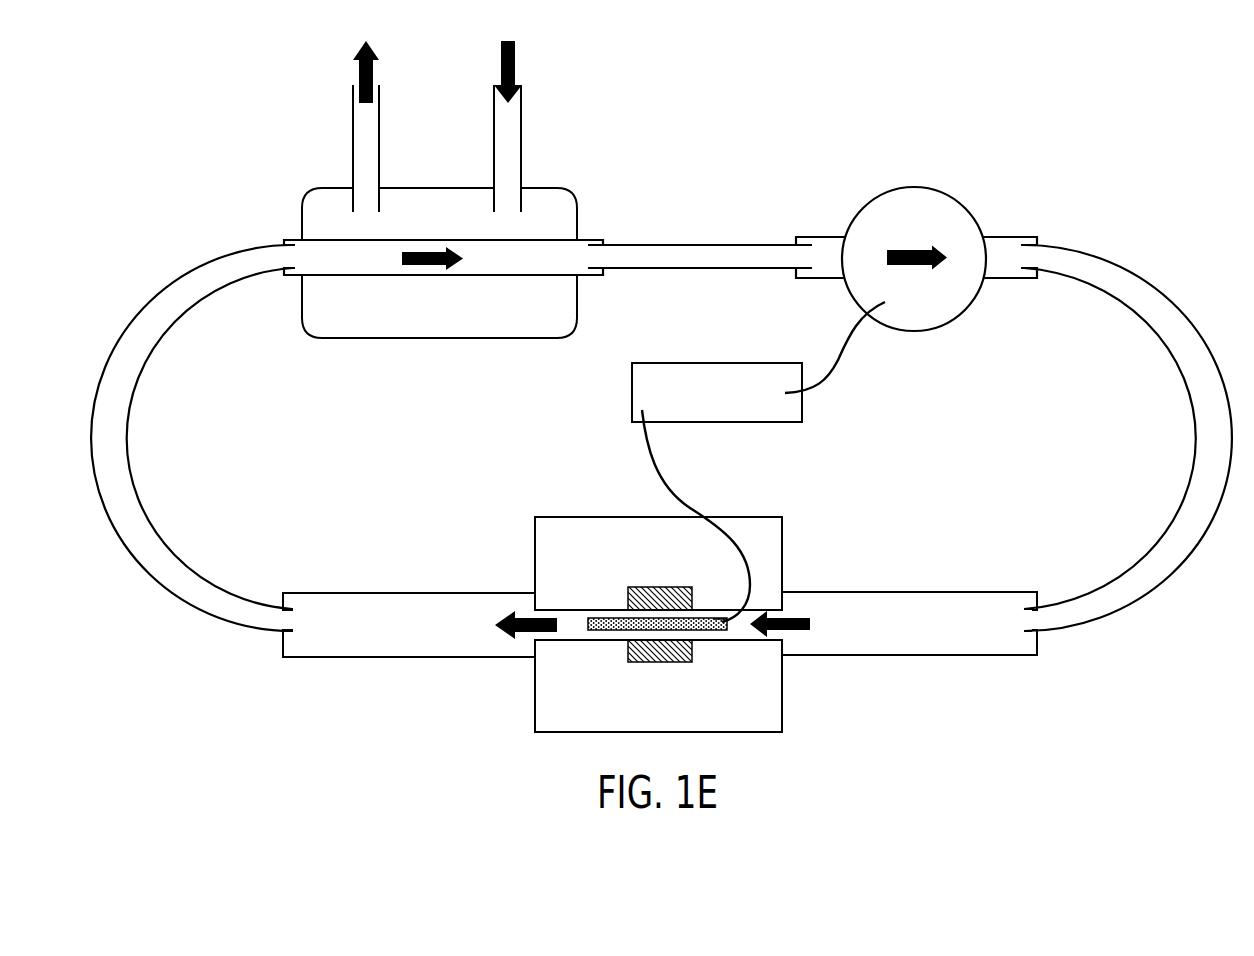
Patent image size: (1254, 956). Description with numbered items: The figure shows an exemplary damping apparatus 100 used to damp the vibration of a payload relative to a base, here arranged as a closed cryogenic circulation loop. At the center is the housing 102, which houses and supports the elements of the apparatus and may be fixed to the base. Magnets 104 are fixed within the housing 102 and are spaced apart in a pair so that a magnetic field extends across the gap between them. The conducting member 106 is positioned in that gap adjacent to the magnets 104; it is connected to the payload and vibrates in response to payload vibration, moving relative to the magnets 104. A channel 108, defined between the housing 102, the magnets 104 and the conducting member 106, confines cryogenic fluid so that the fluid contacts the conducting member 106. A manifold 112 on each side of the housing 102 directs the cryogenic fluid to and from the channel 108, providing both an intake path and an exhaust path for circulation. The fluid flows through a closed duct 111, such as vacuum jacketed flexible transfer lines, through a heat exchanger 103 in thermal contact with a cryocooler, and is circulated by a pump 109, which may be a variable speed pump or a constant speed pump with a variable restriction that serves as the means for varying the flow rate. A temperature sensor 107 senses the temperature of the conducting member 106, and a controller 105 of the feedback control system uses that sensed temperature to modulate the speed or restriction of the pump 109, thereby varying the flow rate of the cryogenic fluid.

The damping apparatus 100 is at (190, 141).
The housing 102 is at (777, 530).
The heat exchanger 103 is at (557, 205).
The magnets 104 is at (668, 596).
The controller 105 is at (662, 376).
The conducting member 106 is at (600, 622).
The temperature sensor 107 is at (718, 622).
The channel 108 is at (568, 624).
The pump 109 is at (926, 205).
The closed duct 111 is at (681, 259).
The manifold 112 is at (393, 598).